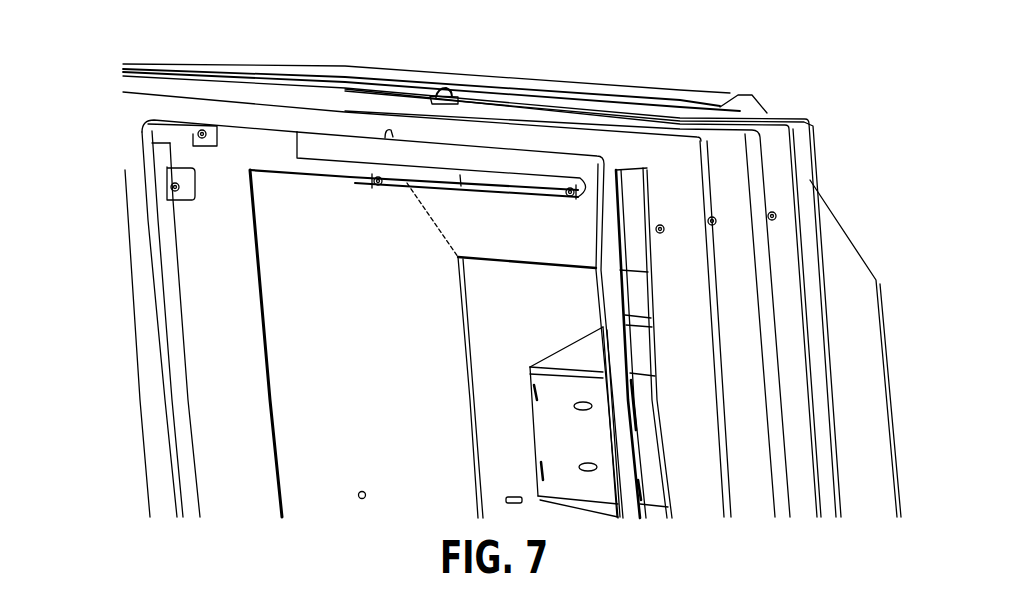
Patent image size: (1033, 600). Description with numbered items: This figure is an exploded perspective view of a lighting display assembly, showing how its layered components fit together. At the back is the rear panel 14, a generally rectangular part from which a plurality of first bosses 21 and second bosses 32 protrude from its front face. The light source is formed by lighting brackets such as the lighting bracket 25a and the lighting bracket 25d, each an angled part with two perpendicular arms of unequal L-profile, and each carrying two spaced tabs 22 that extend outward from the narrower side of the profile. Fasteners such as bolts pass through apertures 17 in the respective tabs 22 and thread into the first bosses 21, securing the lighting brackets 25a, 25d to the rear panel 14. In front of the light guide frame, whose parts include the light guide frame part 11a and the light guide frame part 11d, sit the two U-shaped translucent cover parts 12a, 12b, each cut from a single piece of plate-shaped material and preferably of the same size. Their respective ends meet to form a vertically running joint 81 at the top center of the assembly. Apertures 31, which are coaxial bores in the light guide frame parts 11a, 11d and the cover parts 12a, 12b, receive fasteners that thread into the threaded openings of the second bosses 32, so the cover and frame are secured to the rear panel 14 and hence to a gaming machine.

The light guide frame part 11a is at (755, 150).
The light guide frame part 11d is at (455, 100).
The translucent cover part 12a is at (697, 147).
The translucent cover part 12b is at (285, 97).
The rear panel 14 is at (815, 139).
The aperture 17 is at (572, 195).
The first boss 21 is at (198, 133).
The tab 22 is at (376, 178).
The lighting bracket 25a is at (567, 163).
The lighting bracket 25d is at (205, 110).
The aperture 31 is at (664, 230).
The second boss 32 is at (776, 216).
The joint 81 is at (445, 93).